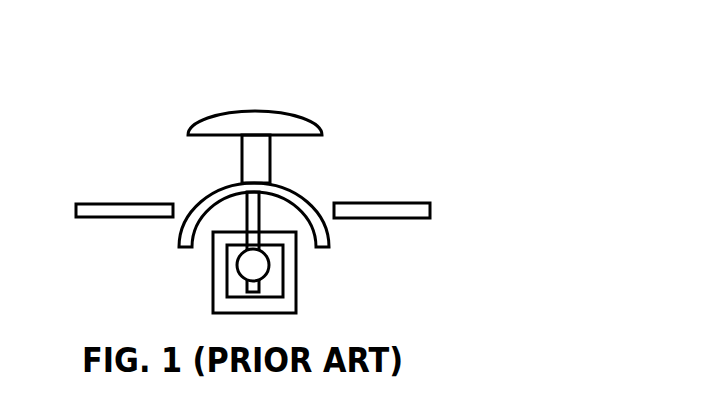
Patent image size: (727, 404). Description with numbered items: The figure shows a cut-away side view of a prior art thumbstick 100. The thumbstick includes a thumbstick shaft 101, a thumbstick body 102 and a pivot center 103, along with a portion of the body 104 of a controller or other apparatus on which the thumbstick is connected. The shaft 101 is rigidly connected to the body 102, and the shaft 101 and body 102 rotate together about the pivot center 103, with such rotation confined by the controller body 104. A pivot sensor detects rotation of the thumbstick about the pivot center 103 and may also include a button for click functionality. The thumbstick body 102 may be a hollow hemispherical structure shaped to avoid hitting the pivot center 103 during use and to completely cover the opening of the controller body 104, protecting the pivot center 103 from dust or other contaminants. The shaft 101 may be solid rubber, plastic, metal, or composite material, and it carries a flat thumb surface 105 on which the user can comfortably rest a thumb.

The prior art device 100 is at (493, 56).
The thumbstick shaft 101 is at (241, 143).
The thumbstick body 102 is at (312, 197).
The pivot center 103 is at (268, 268).
The controller body 104 is at (431, 211).
The flat thumb surface 105 is at (258, 111).